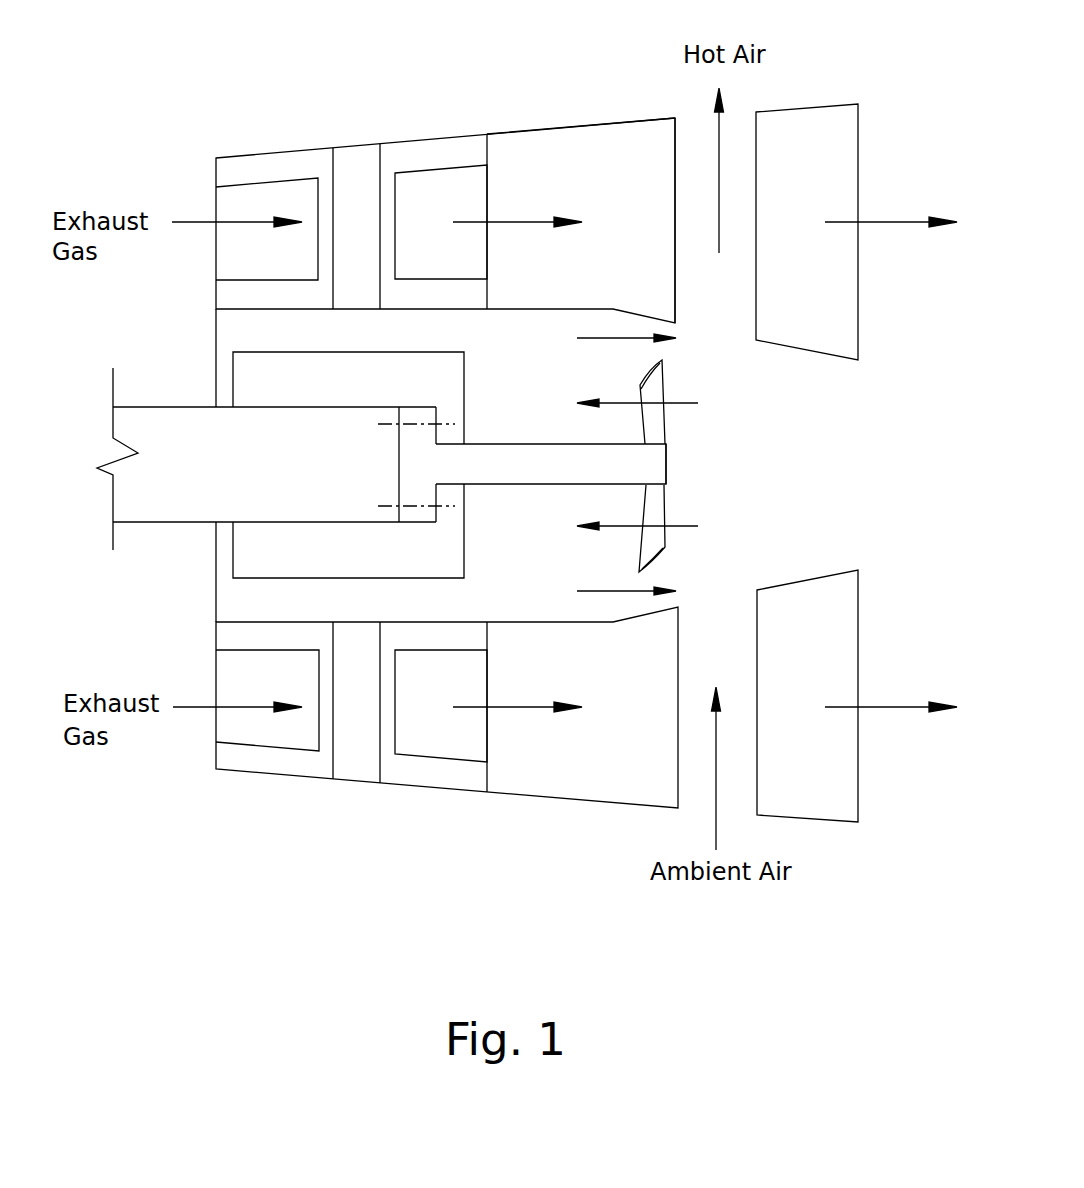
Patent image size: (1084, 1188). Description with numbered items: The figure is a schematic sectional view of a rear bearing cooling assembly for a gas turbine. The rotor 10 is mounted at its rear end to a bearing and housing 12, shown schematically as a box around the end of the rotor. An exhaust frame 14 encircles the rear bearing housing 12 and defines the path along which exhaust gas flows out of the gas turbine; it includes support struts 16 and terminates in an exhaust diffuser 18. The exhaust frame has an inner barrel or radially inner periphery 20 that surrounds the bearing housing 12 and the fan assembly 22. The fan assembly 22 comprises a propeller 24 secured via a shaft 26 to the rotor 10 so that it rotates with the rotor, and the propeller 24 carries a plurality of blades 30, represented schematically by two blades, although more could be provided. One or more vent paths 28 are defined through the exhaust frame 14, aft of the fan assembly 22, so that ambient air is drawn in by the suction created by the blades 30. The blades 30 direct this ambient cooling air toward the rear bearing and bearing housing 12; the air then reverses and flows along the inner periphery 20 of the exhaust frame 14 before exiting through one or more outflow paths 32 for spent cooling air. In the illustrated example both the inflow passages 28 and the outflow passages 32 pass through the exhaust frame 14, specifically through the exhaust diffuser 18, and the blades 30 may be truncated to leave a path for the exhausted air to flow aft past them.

The rotor 10 is at (144, 395).
The bearing and housing 12 is at (243, 346).
The exhaust frame 14 is at (208, 166).
The support struts 16 is at (382, 173).
The exhaust diffuser 18 is at (517, 120).
The inner periphery 20 is at (584, 609).
The fan assembly 22 is at (553, 502).
The propeller 24 is at (681, 466).
The shaft 26 is at (488, 432).
The vent paths 28 is at (757, 783).
The blades 30 is at (648, 423).
The paths 32 is at (669, 163).